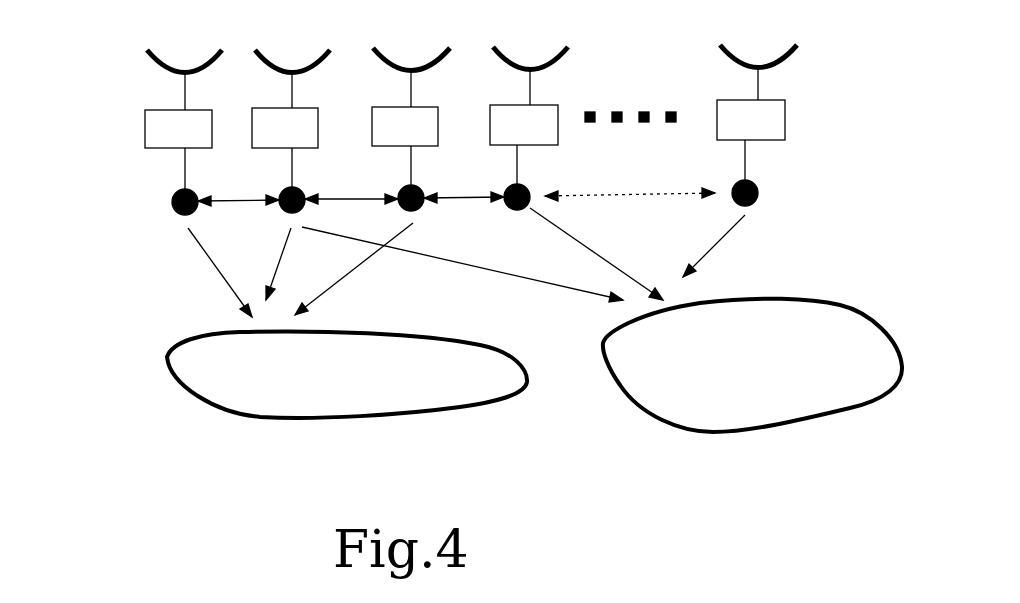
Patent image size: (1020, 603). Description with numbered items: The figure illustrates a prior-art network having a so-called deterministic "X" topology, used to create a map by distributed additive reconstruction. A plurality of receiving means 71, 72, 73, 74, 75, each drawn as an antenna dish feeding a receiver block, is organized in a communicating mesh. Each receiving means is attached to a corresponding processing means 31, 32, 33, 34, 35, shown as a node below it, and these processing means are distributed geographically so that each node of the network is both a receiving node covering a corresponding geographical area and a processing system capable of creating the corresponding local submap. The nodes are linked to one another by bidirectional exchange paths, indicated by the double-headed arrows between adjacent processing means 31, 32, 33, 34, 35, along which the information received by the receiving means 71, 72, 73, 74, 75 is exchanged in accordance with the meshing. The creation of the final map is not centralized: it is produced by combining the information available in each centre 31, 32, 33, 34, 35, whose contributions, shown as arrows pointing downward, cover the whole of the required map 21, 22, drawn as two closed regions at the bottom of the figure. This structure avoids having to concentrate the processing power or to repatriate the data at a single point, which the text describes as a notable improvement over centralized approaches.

The map 21 is at (278, 396).
The map 22 is at (772, 440).
The processing means 31 is at (180, 196).
The processing means 32 is at (288, 216).
The processing means 33 is at (405, 186).
The processing means 34 is at (517, 212).
The processing means 35 is at (757, 196).
The receiving means 71 is at (152, 110).
The receiving means 72 is at (285, 120).
The receiving means 73 is at (405, 118).
The receiving means 74 is at (522, 117).
The receiving means 75 is at (775, 120).